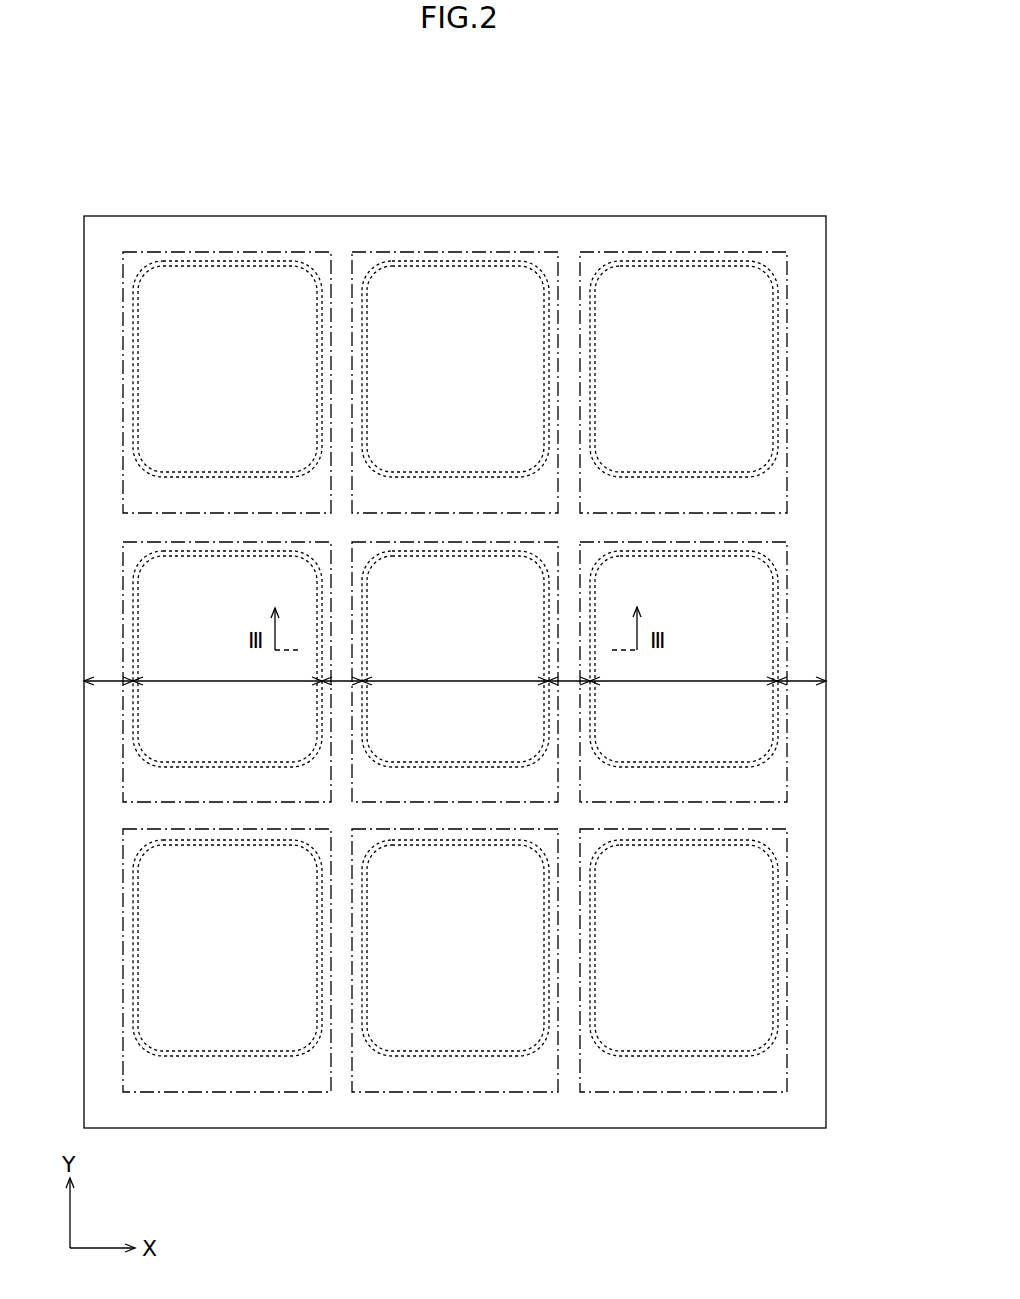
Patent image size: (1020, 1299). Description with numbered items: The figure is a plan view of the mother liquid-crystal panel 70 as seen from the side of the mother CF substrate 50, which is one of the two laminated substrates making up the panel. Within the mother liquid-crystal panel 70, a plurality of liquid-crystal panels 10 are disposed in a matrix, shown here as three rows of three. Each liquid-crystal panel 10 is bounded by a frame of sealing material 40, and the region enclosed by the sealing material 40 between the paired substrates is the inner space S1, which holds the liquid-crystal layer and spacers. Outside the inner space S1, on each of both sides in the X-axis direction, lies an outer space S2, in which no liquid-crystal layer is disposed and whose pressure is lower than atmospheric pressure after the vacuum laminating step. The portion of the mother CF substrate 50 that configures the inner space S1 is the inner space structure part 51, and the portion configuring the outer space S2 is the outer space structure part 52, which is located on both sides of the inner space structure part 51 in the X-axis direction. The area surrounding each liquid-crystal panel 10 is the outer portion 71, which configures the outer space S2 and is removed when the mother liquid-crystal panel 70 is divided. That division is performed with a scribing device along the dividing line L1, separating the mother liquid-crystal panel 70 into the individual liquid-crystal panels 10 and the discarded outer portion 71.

The mother liquid-crystal panel 70 is at (120, 185).
The mother CF substrate 50 is at (762, 1112).
The outer portion 71 is at (565, 608).
The sealing material 40 is at (470, 548).
The liquid-crystal panel 10 is at (195, 578).
The inner space structure part 51 is at (432, 735).
The outer space structure part 52 is at (342, 703).
The dividing line L1 is at (557, 763).
The inner space S1 is at (455, 668).
The outer space S2 is at (105, 680).